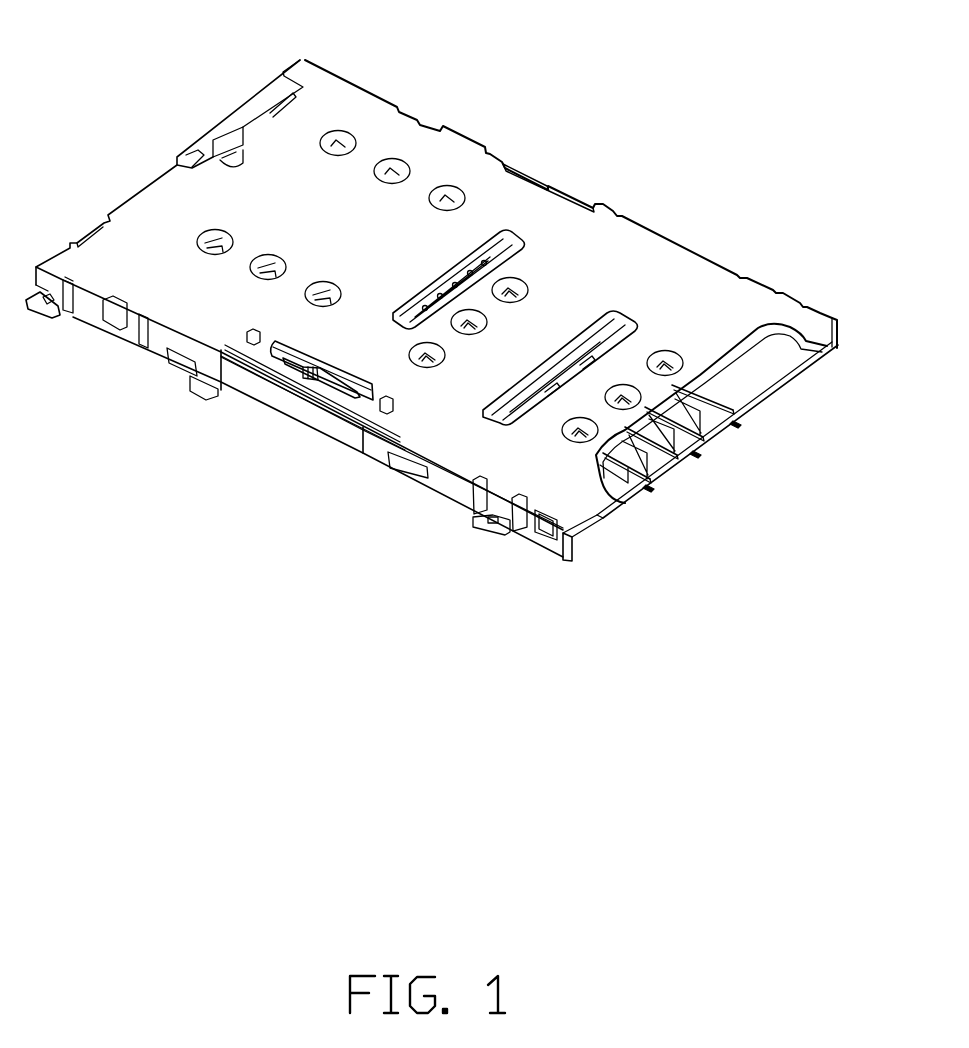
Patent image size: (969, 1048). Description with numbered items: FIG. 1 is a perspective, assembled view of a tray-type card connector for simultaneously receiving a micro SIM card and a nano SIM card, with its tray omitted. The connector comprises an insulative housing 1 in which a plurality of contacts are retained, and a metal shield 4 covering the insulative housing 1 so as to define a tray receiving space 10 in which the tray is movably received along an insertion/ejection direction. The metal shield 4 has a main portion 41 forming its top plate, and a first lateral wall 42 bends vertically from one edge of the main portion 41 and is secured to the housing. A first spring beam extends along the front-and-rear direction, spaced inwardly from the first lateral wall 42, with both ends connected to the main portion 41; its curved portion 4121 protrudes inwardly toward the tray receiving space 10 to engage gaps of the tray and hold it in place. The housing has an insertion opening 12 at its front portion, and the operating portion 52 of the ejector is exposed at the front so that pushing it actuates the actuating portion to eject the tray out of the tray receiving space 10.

The insulative housing 1 is at (278, 400).
The metal shield 4 is at (333, 105).
The main portion 41 is at (537, 217).
The curved portion 4121 is at (318, 368).
The first lateral wall 42 is at (88, 312).
The tray receiving space 10 is at (770, 353).
The insertion opening 12 is at (740, 373).
The operating portion 52 is at (593, 537).